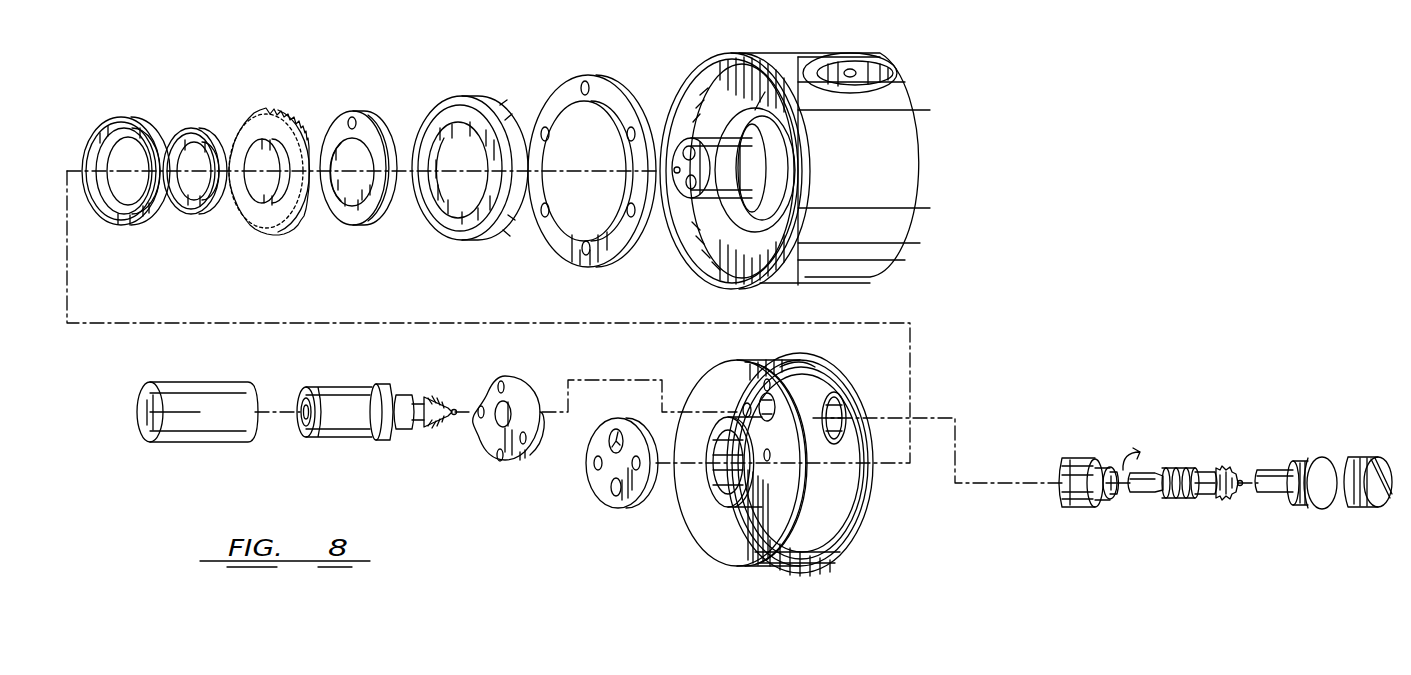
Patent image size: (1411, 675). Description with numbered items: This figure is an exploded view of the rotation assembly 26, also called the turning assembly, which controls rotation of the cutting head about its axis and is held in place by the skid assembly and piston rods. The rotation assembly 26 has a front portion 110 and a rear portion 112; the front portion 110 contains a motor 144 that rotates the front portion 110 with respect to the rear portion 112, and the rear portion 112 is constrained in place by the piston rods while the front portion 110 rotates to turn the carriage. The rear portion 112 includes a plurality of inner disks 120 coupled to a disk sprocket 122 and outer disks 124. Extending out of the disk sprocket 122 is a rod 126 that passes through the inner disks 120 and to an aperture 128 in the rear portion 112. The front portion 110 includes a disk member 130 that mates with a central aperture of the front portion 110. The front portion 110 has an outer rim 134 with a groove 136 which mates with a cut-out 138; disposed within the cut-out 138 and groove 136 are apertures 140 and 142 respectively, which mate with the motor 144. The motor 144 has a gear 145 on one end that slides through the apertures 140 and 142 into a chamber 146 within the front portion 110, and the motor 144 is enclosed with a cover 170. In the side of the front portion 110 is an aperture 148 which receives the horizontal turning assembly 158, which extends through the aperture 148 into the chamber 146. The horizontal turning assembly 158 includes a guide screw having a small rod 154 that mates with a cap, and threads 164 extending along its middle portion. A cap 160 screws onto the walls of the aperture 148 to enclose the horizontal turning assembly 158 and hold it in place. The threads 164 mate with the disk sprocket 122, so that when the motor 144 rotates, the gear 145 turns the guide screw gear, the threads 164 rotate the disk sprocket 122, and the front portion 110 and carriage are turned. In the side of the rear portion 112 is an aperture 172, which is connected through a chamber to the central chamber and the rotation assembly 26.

The rotation assembly 26 is at (805, 45).
The front portion 110 is at (538, 488).
The rear portion 112 is at (872, 262).
The inner disks 120 is at (652, 70).
The disk sprocket 122 is at (260, 110).
The outer disks 124 is at (215, 110).
The rod 126 is at (312, 120).
The aperture 128 is at (765, 92).
The disk member 130 is at (632, 505).
The outer rim 134 is at (783, 393).
The groove 136 is at (820, 362).
The cut-out 138 is at (527, 467).
The aperture 140 is at (610, 442).
The aperture 142 is at (743, 408).
The motor 144 is at (354, 436).
The gear 145 is at (440, 428).
The chamber 146 is at (878, 443).
The aperture 148 is at (846, 407).
The small rod 154 is at (1241, 487).
The horizontal turning assembly 158 is at (1392, 450).
The cap 160 is at (1388, 500).
The threads 164 is at (1185, 497).
The cover 170 is at (170, 443).
The aperture 172 is at (885, 60).